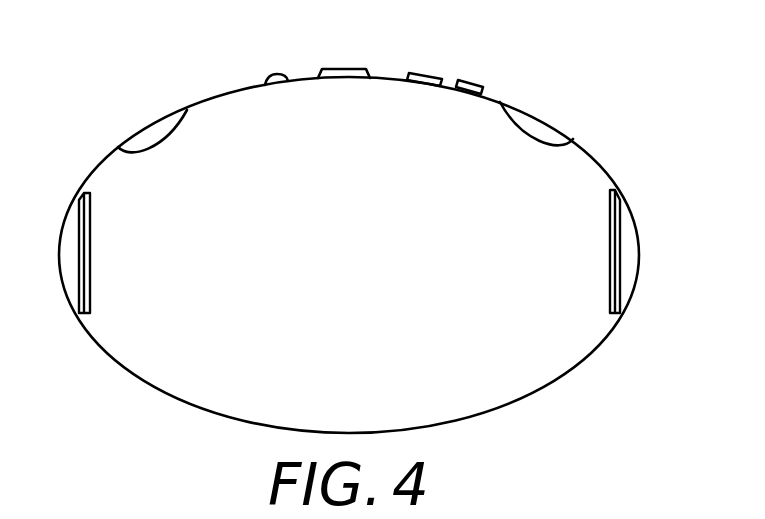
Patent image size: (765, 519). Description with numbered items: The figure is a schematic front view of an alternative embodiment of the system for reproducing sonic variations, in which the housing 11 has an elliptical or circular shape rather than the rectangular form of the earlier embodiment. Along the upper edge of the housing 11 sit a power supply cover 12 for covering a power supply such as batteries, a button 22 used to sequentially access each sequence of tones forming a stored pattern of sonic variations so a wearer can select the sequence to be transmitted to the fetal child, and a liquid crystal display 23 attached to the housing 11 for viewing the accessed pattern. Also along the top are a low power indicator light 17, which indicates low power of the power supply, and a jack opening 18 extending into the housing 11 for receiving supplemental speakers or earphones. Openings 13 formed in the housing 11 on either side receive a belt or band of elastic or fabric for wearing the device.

The housing 11 is at (177, 320).
The power supply cover 12 is at (150, 120).
The openings 13 is at (78, 325).
The low power indicator light 17 is at (432, 68).
The jack opening 18 is at (475, 78).
The button 22 is at (280, 70).
The liquid crystal display 23 is at (344, 85).